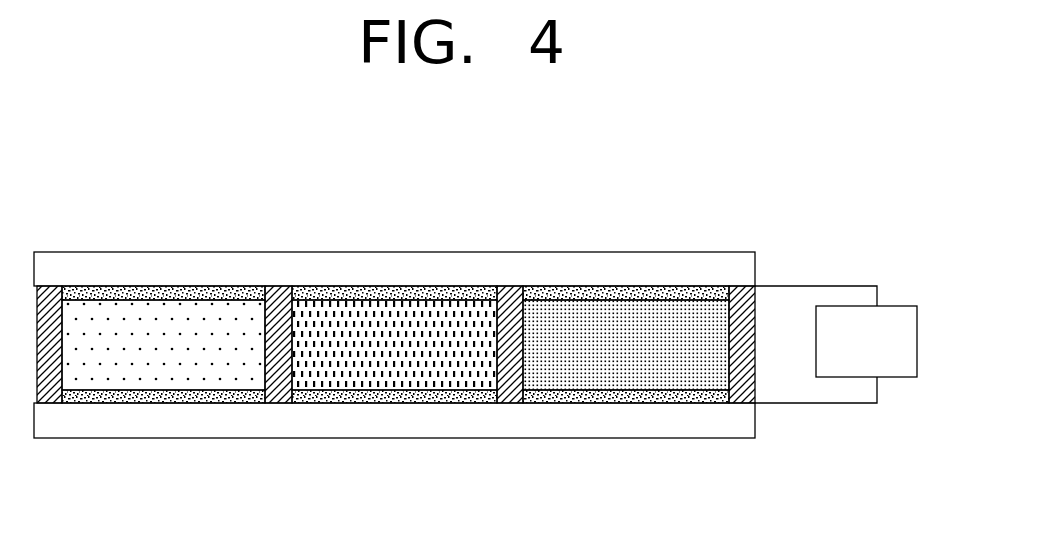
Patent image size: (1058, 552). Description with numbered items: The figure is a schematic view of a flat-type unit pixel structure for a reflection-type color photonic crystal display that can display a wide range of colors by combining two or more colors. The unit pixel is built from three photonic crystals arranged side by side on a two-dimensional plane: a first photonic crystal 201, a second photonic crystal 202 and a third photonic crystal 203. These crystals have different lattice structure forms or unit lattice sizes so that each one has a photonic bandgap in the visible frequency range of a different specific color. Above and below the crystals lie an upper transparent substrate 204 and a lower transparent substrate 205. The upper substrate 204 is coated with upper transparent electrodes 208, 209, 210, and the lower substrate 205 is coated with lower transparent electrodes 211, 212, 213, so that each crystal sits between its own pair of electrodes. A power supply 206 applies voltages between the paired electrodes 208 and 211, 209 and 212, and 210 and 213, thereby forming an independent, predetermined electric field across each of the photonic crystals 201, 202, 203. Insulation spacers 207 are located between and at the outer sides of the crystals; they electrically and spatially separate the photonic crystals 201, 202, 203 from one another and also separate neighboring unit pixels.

The first photonic crystal 201 is at (127, 323).
The second photonic crystal 202 is at (368, 322).
The third photonic crystal 203 is at (582, 322).
The upper transparent substrate 204 is at (693, 261).
The lower transparent substrate 205 is at (640, 428).
The power supply 206 is at (892, 362).
The insulation spacer 207 is at (48, 393).
The upper transparent electrode 208 is at (233, 293).
The upper transparent electrode 209 is at (458, 290).
The upper transparent electrode 210 is at (662, 290).
The lower transparent electrode 211 is at (177, 393).
The lower transparent electrode 212 is at (390, 393).
The lower transparent electrode 213 is at (608, 393).